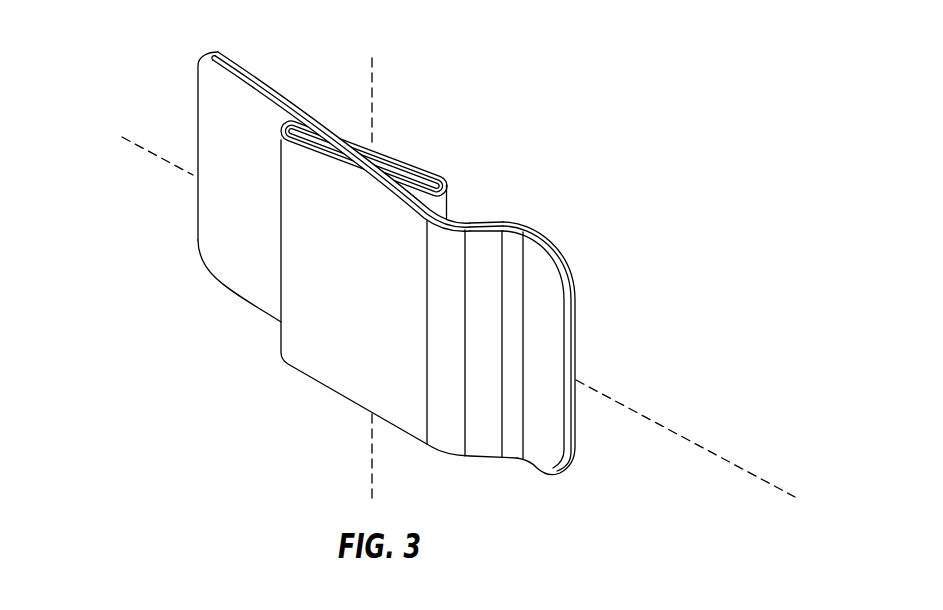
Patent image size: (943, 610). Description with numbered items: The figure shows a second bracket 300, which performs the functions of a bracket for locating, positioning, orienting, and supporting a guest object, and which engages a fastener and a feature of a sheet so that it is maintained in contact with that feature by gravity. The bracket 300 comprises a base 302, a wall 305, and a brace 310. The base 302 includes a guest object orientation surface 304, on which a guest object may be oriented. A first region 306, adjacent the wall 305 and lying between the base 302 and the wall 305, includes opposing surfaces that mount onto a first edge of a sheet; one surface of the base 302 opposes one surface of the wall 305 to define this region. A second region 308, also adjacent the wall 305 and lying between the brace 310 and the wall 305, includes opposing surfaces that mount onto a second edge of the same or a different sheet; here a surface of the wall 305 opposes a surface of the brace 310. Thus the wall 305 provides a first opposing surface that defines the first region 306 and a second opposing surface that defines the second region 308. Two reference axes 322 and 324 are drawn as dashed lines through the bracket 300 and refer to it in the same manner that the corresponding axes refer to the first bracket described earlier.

The bracket 300 is at (118, 68).
The base 302 is at (561, 249).
The guest object orientation surface 304 is at (357, 372).
The wall 305 is at (378, 158).
The first region 306 is at (466, 207).
The second region 308 is at (288, 109).
The brace 310 is at (277, 86).
The axis 322 is at (373, 90).
The axis 324 is at (738, 463).